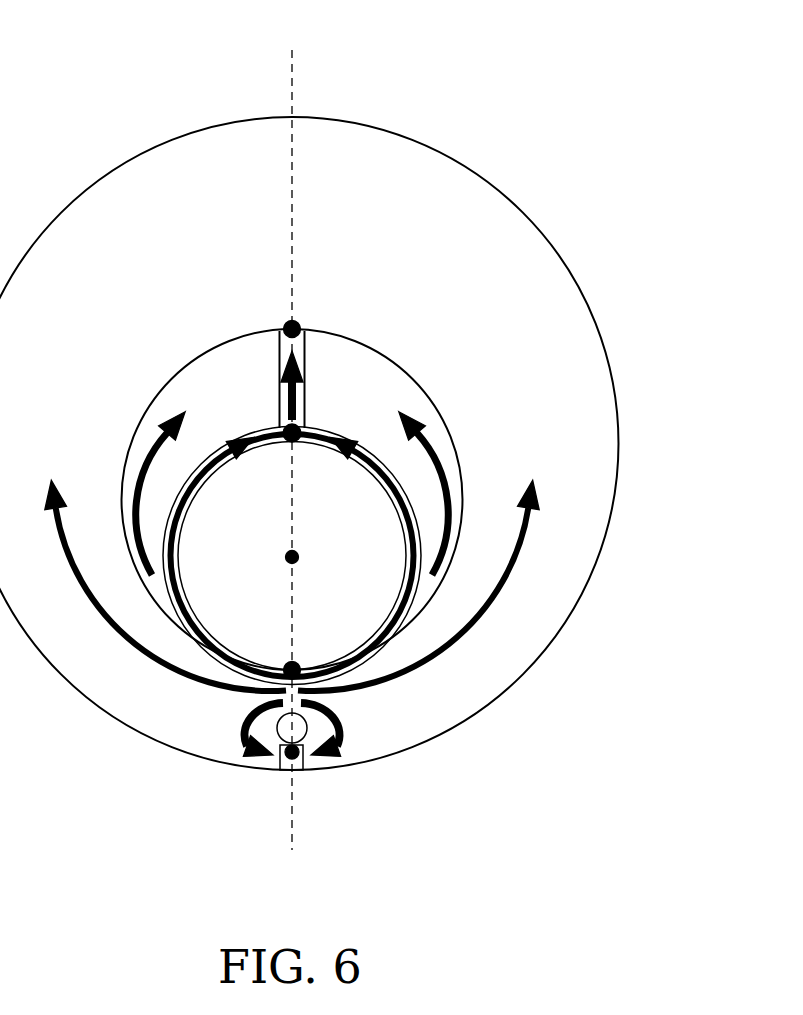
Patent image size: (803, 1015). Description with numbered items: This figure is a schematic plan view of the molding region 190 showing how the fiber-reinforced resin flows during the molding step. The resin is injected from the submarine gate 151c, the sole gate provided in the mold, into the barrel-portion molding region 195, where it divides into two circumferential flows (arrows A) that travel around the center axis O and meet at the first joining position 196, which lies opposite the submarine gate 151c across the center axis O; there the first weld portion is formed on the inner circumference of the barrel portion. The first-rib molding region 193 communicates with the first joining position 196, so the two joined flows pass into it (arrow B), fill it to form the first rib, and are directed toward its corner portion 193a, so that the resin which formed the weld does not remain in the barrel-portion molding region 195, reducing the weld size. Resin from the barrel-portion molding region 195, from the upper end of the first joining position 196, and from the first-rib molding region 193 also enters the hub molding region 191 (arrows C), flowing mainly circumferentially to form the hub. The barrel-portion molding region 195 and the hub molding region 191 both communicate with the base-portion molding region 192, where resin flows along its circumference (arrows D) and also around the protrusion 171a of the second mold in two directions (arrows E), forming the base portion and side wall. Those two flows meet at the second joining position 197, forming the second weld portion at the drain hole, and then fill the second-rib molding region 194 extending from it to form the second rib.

The molding region 190 is at (340, 453).
The base-portion molding region 192 is at (588, 302).
The hub molding region 191 is at (392, 362).
The first-rib molding region 193 is at (275, 353).
The corner portion 193a is at (296, 326).
The barrel-portion molding region 195 is at (252, 420).
The first joining position 196 is at (300, 427).
The submarine gate 151c is at (303, 677).
The protrusion 171a is at (278, 771).
The second-rib molding region 194 is at (303, 771).
The second joining position 197 is at (300, 778).